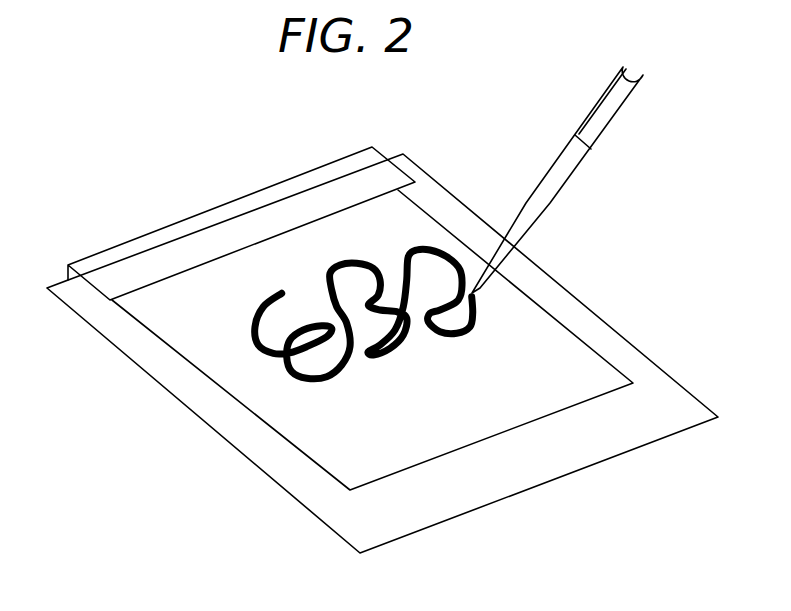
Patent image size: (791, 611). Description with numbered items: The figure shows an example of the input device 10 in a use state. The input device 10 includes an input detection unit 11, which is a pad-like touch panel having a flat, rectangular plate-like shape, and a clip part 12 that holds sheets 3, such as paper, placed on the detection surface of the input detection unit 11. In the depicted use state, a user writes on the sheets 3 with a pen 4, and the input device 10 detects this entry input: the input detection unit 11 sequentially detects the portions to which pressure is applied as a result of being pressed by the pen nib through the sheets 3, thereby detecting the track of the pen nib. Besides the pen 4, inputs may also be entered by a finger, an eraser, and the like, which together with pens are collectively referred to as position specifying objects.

The input device 10 is at (382, 317).
The sheets 3 is at (545, 340).
The input detection unit 11 is at (435, 196).
The clip part 12 is at (217, 226).
The pen 4 is at (621, 91).